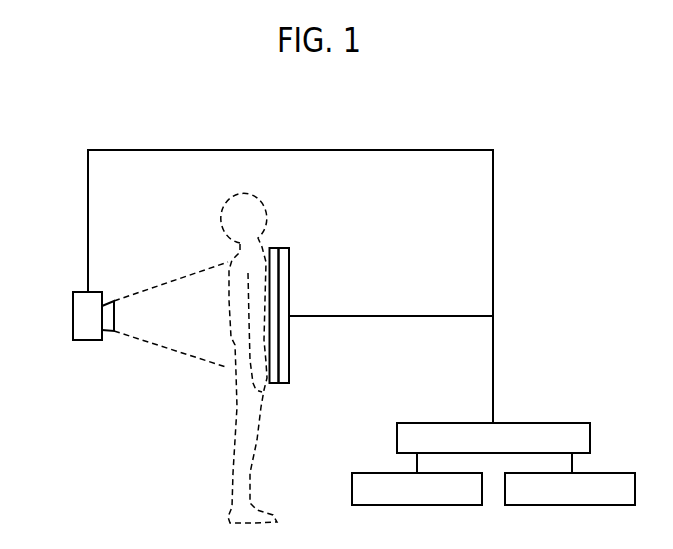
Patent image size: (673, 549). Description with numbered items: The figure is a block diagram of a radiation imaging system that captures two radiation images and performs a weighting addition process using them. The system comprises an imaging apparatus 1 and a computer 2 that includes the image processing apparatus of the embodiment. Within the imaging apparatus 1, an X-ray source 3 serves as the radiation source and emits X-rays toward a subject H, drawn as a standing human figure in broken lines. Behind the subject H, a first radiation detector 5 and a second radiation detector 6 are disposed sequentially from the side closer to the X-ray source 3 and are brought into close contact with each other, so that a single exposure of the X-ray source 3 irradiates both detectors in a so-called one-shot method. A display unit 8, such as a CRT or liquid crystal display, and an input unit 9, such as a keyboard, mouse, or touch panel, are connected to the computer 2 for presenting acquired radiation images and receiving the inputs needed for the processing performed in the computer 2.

The imaging apparatus 1 is at (117, 131).
The computer 2 is at (590, 432).
The X-ray source 3 is at (73, 312).
The first radiation detector 5 is at (277, 248).
The second radiation detector 6 is at (287, 248).
The display unit 8 is at (445, 505).
The input unit 9 is at (600, 505).
The subject H is at (235, 197).